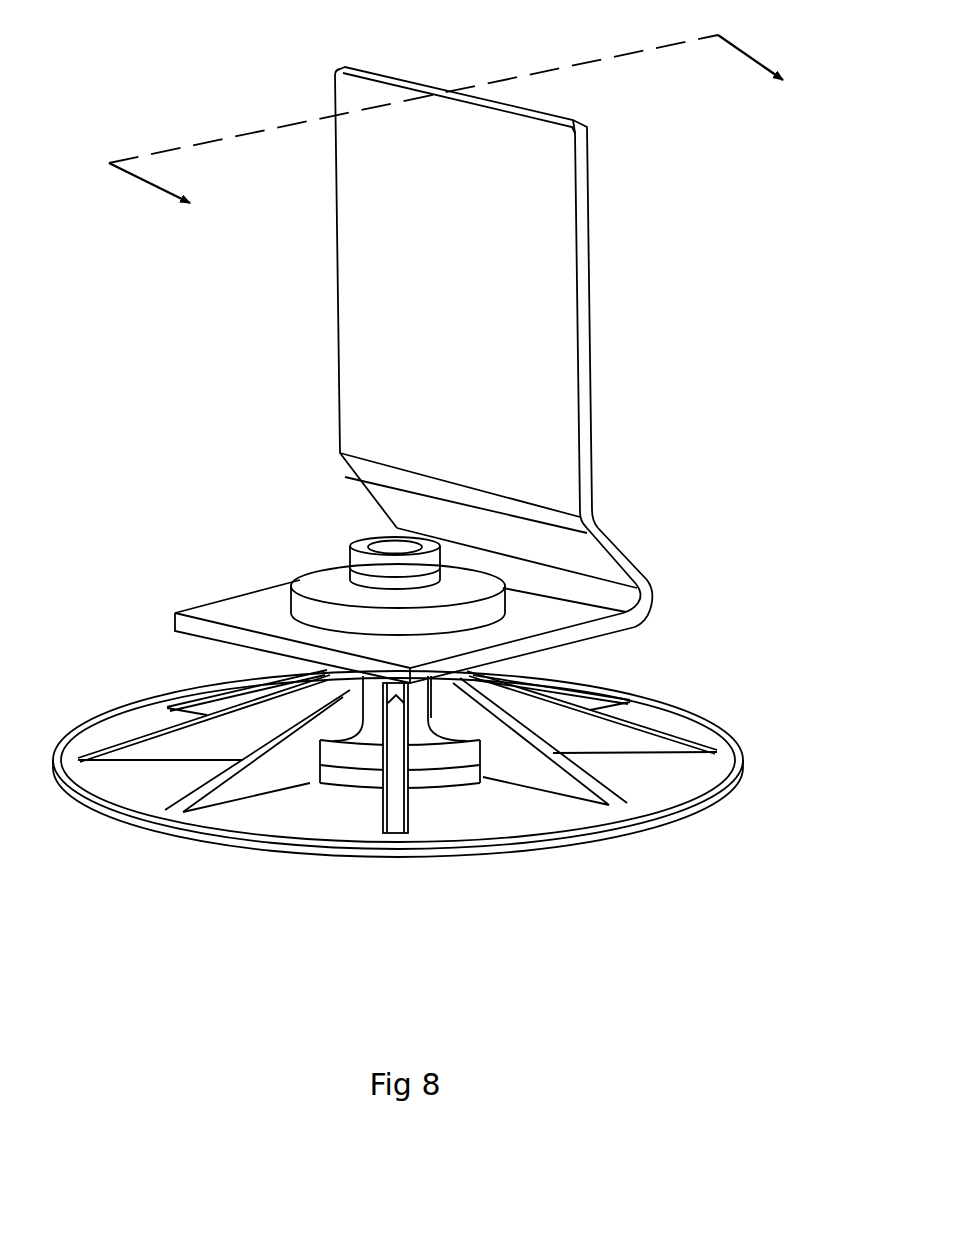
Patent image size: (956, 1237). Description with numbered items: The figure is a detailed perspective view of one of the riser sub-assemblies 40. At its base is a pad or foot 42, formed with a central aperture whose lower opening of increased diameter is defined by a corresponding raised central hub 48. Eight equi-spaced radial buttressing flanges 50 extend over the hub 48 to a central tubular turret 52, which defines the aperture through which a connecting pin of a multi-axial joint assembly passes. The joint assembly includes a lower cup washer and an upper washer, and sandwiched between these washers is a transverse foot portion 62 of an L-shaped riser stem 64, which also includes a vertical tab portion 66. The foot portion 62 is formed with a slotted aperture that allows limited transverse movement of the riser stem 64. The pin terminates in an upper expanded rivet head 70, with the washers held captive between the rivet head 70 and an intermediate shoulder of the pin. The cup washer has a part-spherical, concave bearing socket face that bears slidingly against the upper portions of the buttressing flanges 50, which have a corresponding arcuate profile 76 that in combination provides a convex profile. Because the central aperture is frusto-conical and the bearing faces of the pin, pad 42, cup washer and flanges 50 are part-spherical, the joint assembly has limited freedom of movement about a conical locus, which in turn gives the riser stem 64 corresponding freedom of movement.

The riser sub-assembly 40 is at (437, 470).
The pad or foot 42 is at (670, 780).
The raised central hub 48 is at (433, 755).
The radial buttressing flanges 50 is at (163, 730).
The central tubular turret 52 is at (418, 698).
The transverse foot portion 62 is at (247, 608).
The L-shaped riser stem 64 is at (620, 532).
The vertical tab portion 66 is at (463, 292).
The upper expanded rivet head 70 is at (364, 558).
The arcuate profile 76 is at (343, 687).